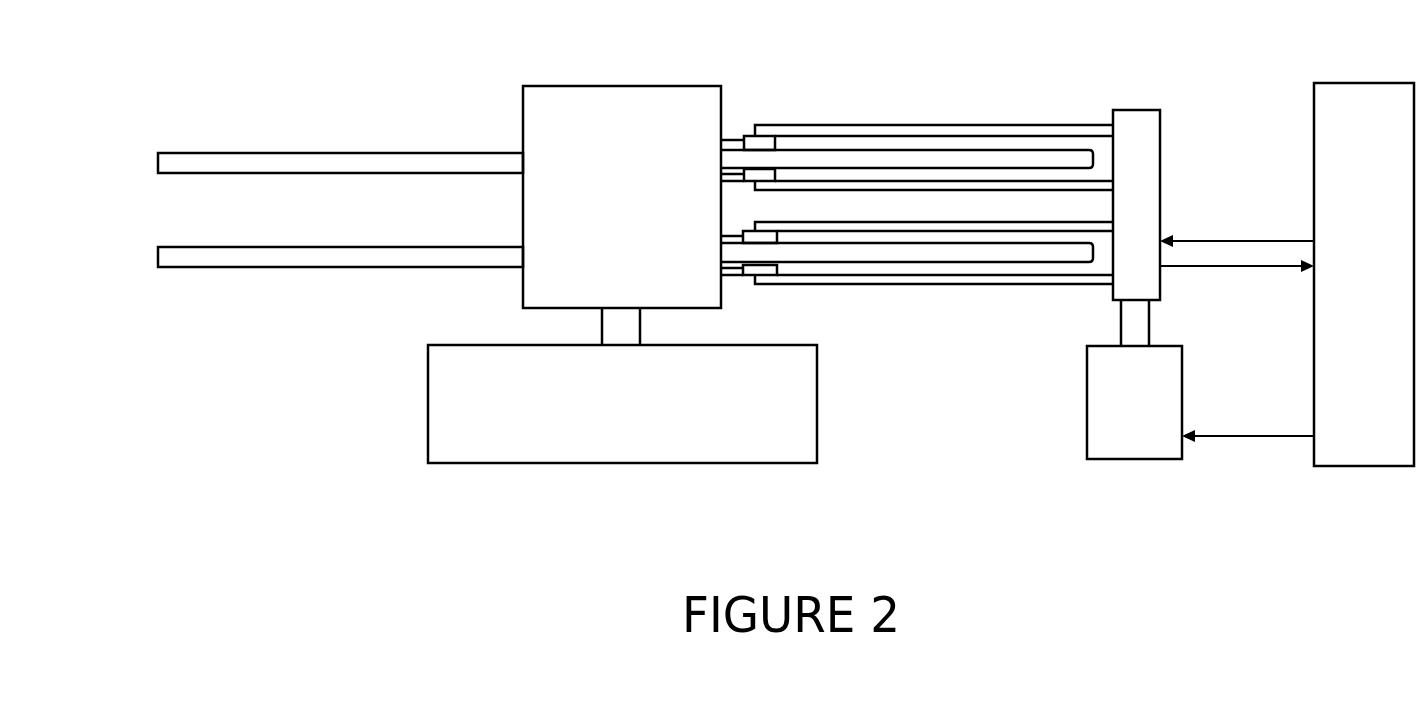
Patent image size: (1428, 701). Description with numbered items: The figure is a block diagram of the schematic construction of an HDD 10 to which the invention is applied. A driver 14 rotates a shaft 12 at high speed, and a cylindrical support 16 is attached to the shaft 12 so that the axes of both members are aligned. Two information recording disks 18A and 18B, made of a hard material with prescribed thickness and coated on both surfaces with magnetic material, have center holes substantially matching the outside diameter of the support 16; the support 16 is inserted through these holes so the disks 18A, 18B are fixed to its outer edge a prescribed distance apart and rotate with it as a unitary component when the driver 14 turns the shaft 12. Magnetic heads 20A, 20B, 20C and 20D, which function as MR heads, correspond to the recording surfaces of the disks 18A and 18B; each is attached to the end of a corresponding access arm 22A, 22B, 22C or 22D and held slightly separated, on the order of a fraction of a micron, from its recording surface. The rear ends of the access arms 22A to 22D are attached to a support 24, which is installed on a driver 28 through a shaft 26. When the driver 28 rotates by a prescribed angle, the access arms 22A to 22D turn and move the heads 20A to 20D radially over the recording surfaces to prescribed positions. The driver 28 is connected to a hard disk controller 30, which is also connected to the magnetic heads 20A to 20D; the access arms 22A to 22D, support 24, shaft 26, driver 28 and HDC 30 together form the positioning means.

The HDD 10 is at (240, 95).
The shaft 12 is at (640, 331).
The driver 14 is at (817, 397).
The cylindrical support 16 is at (692, 85).
The disk 18A is at (158, 164).
The disk 18B is at (158, 258).
The magnetic head 20A is at (744, 140).
The magnetic head 20B is at (744, 177).
The magnetic head 20C is at (743, 236).
The magnetic head 20D is at (743, 268).
The access arm 22A is at (915, 124).
The access arm 22B is at (828, 192).
The access arm 22C is at (956, 222).
The access arm 22D is at (850, 286).
The support 24 is at (1143, 164).
The shaft 26 is at (1150, 328).
The driver 28 is at (1136, 460).
The hard disk controller 30 is at (1365, 467).